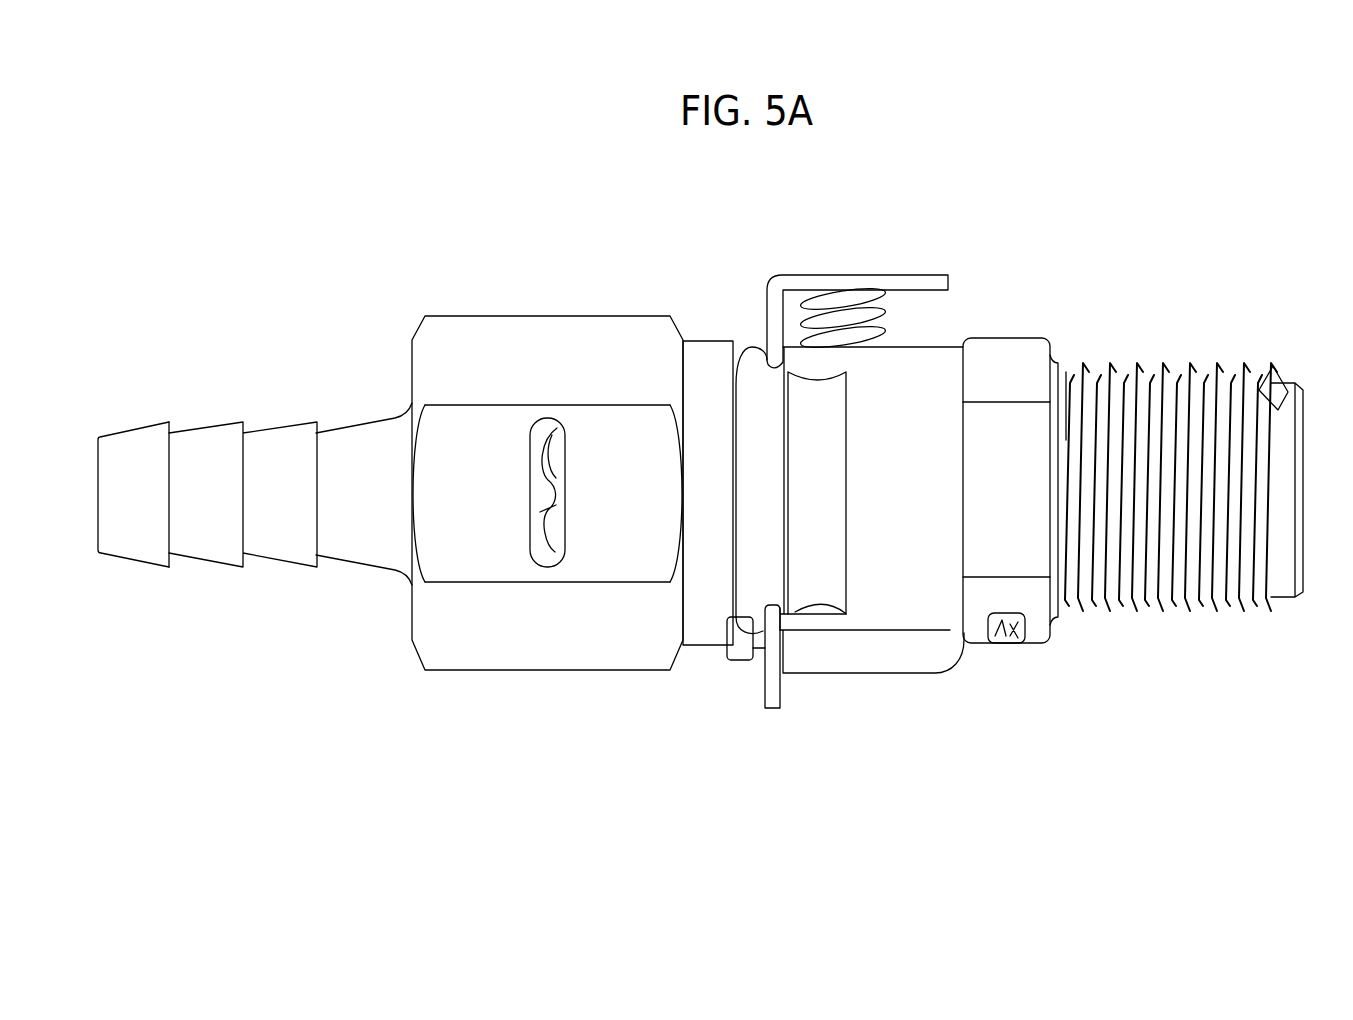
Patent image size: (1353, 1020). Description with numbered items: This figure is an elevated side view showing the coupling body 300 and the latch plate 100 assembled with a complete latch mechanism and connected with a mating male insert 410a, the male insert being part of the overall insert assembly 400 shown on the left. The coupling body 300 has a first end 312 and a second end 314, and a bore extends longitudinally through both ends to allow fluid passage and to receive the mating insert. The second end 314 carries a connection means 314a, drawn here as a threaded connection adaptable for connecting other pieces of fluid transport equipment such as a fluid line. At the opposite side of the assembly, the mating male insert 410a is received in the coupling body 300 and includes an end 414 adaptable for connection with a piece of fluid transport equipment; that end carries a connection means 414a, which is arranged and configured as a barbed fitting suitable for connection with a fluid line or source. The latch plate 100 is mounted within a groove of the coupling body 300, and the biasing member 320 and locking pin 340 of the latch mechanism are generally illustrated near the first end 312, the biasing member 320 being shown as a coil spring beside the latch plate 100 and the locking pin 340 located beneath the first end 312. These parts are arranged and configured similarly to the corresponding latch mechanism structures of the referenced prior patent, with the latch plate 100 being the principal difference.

The latch plate 100 is at (878, 273).
The coupling body 300 is at (1153, 300).
The first end 312 is at (751, 352).
The second end 314 is at (1278, 376).
The connection means 314a is at (1226, 612).
The biasing member 320 is at (890, 330).
The locking pin 340 is at (744, 646).
The hose barb fitting 400 is at (546, 275).
The mating male insert 410a is at (418, 328).
The end 414 is at (97, 553).
The connection means 414a is at (207, 560).